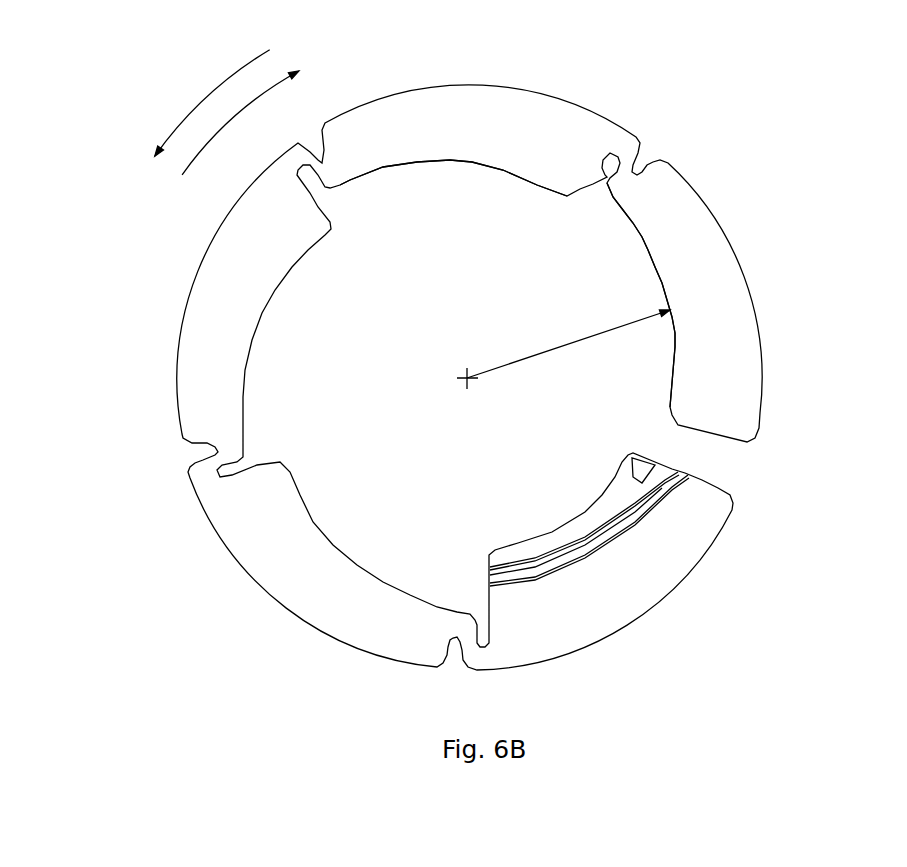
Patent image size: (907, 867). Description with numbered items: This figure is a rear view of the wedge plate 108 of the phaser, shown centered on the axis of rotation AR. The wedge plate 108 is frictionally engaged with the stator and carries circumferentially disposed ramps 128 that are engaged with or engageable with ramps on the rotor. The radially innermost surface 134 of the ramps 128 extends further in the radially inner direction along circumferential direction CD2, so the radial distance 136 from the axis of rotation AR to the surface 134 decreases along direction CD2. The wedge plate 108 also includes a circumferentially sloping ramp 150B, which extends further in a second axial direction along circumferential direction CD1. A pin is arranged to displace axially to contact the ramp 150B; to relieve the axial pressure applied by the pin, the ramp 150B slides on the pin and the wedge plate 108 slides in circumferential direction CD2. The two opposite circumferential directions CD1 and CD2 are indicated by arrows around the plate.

The wedge plate 108 is at (805, 105).
The circumferentially sloping ramp 150B is at (645, 460).
The radially innermost surface 134 is at (472, 163).
The circumferentially disposed ramps 128 is at (651, 254).
The radial distance 136 is at (600, 333).
The axis of rotation AR is at (465, 375).
The circumferential direction CD1 is at (200, 101).
The circumferential direction CD2 is at (284, 76).